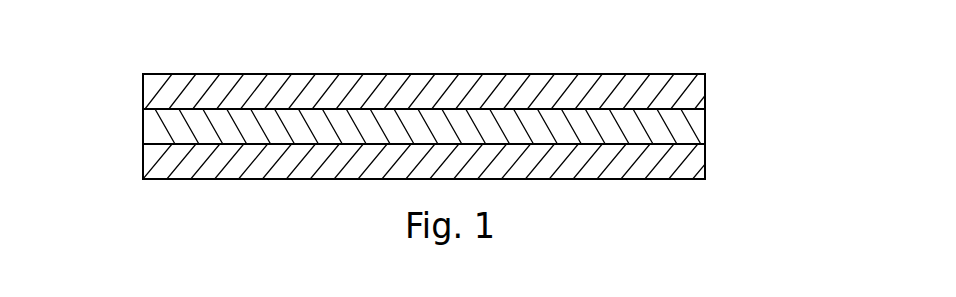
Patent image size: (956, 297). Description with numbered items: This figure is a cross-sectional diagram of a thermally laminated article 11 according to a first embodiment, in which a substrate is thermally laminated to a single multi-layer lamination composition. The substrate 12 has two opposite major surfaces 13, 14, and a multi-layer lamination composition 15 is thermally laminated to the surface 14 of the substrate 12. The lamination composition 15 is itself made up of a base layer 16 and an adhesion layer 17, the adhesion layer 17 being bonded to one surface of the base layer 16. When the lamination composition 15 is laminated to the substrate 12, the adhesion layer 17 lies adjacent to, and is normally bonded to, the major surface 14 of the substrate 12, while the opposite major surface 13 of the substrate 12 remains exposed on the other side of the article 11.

The thermally laminated article 11 is at (430, 123).
The substrate 12 is at (704, 155).
The major surface 13 is at (165, 179).
The major surface 14 is at (168, 143).
The multi-layer lamination composition 15 is at (552, 109).
The base layer 16 is at (165, 74).
The adhesion layer 17 is at (143, 139).